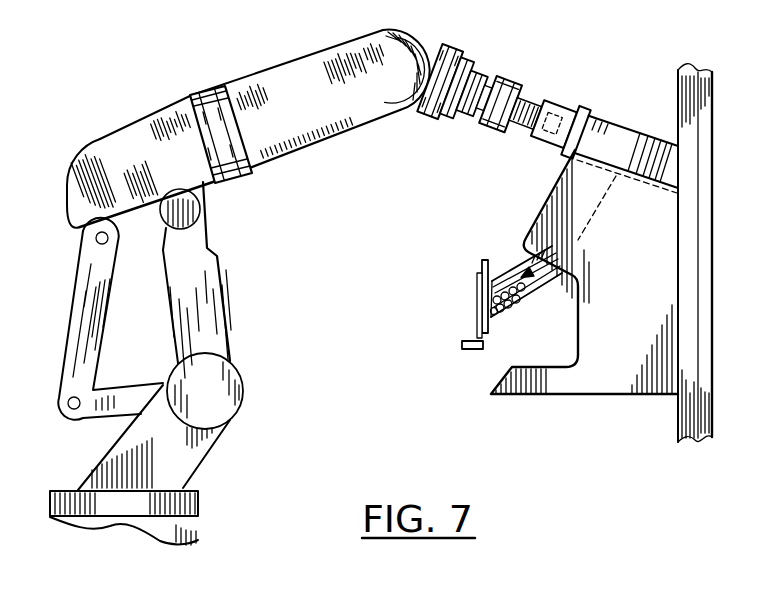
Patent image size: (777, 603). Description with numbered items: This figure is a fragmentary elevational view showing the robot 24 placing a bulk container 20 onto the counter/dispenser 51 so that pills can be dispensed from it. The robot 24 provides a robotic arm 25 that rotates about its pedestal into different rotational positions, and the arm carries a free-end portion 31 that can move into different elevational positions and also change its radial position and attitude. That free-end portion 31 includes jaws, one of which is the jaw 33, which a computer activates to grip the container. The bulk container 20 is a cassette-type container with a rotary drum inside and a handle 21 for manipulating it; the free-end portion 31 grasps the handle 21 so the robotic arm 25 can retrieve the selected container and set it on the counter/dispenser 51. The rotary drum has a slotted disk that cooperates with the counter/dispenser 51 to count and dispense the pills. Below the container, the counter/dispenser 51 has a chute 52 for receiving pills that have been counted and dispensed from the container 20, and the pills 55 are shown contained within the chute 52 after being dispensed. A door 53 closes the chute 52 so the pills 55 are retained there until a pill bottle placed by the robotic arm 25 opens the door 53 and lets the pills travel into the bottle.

The bulk container 20 is at (620, 143).
The handle 21 is at (563, 112).
The robot 24 is at (144, 100).
The robotic arm 25 is at (332, 82).
The free-end portion 31 is at (537, 102).
The jaw 33 is at (558, 150).
The counter/dispenser 51 is at (639, 278).
The chute 52 is at (556, 283).
The door 53 is at (478, 314).
The pills 55 is at (508, 270).